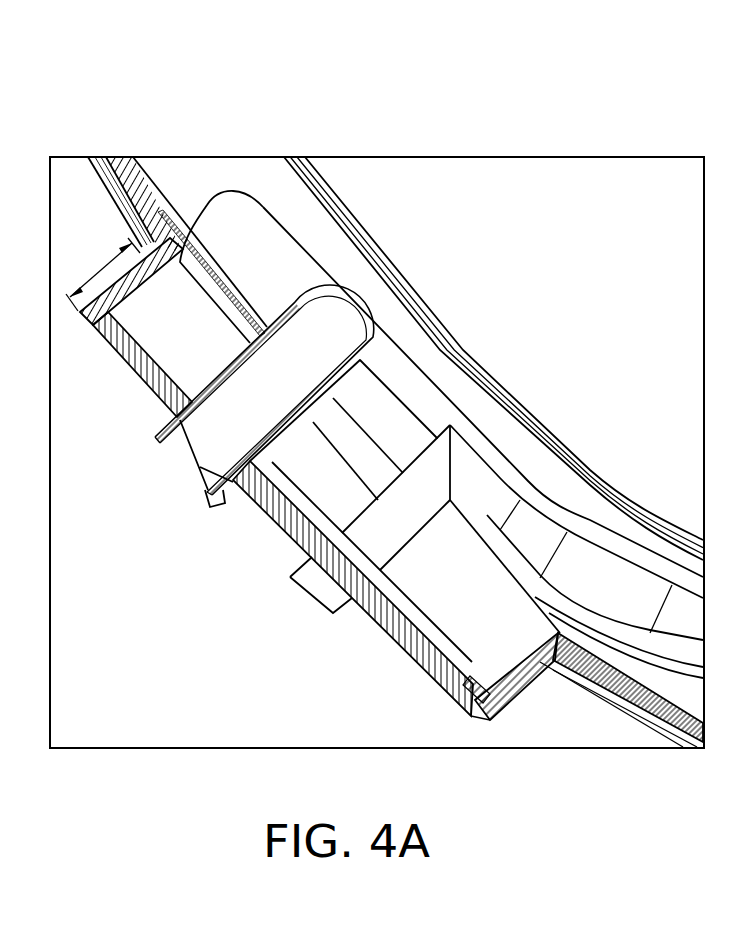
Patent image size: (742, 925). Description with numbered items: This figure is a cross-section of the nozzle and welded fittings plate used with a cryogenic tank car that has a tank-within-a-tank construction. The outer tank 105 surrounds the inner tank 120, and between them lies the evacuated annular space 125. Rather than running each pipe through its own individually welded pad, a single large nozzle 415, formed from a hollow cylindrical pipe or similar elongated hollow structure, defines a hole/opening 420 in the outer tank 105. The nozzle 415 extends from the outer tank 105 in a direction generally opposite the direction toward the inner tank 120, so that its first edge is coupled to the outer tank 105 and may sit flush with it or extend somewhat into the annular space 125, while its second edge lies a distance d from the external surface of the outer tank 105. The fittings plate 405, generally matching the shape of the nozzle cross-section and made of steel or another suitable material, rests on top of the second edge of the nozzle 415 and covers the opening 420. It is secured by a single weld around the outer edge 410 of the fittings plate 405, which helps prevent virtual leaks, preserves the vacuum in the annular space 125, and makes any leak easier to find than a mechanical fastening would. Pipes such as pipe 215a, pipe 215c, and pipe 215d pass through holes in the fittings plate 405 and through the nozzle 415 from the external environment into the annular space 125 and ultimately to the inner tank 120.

The outer tank 105 is at (110, 205).
The annular space 125 is at (185, 178).
The hole/opening 420 is at (183, 290).
The inner tank 120 is at (432, 318).
The pipe 215a is at (190, 455).
The pipe 215d is at (226, 507).
The pipe 215c is at (297, 598).
The fittings plate 405 is at (400, 648).
The outer edge 410 is at (482, 716).
The nozzle 415 is at (540, 690).